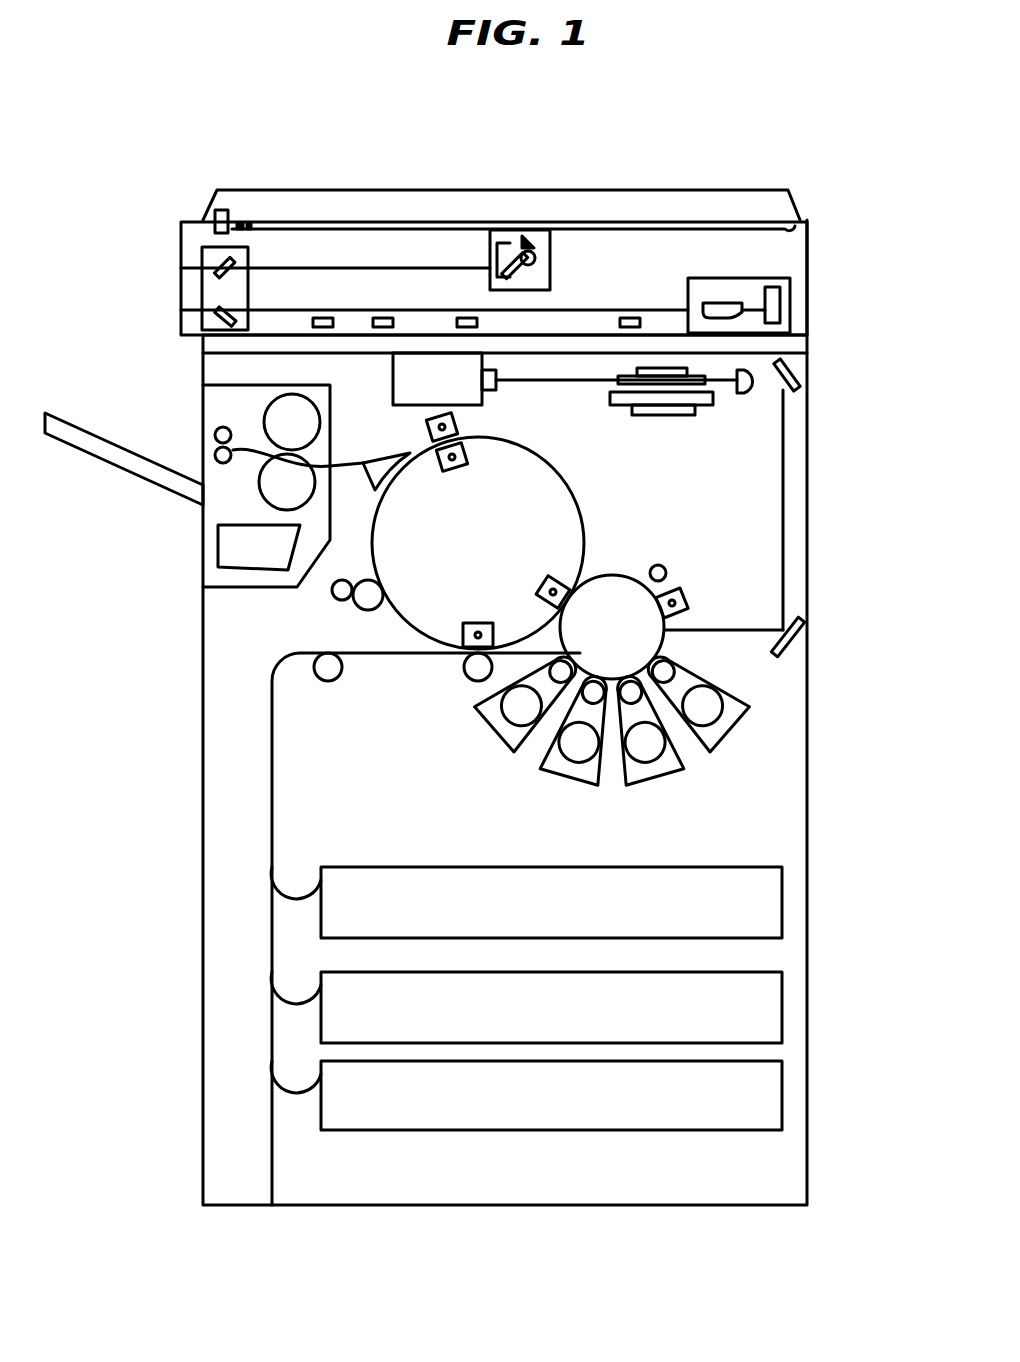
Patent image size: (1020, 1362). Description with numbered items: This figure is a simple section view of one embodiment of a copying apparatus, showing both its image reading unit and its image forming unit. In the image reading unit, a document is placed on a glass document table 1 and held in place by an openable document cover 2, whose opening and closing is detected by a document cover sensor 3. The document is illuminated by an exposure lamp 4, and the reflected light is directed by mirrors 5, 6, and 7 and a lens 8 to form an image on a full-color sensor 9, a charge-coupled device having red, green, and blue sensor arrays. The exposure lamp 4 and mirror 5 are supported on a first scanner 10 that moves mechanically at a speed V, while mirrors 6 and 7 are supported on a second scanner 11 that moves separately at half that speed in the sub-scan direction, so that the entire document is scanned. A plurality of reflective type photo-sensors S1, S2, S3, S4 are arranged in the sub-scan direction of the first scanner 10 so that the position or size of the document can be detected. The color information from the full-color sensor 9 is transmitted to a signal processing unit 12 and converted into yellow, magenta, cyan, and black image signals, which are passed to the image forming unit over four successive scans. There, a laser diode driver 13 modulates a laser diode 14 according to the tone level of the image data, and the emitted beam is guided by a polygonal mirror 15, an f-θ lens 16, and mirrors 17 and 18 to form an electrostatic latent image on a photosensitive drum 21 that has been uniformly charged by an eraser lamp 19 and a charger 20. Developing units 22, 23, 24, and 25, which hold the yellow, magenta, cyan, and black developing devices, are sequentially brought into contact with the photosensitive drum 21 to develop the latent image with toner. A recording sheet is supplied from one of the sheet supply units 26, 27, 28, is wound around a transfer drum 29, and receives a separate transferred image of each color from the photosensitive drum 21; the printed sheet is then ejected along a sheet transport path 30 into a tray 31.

The glass document table 1 is at (808, 225).
The document cover 2 is at (340, 190).
The document cover sensor 3 is at (208, 218).
The exposure lamp 4 is at (556, 246).
The mirror 5 is at (492, 270).
The mirror 6 is at (202, 265).
The mirror 7 is at (202, 318).
The lens 8 is at (720, 302).
The full-color sensor 9 is at (808, 280).
The first scanner 10 is at (552, 285).
The second scanner 11 is at (245, 255).
The signal processing unit 12 is at (800, 340).
The laser diode driver 13 is at (393, 378).
The laser diode 14 is at (492, 395).
The polygonal mirror 15 is at (665, 416).
The f-θ lens 16 is at (746, 396).
The mirror 17 is at (800, 372).
The mirror 18 is at (808, 645).
The eraser lamp 19 is at (666, 568).
The charger 20 is at (690, 604).
The photosensitive drum 21 is at (612, 573).
The developing unit 22 is at (728, 740).
The developing unit 23 is at (655, 775).
The developing unit 24 is at (572, 775).
The developing unit 25 is at (492, 735).
The sheet supply unit 26 is at (782, 893).
The sheet supply unit 27 is at (782, 995).
The sheet supply unit 28 is at (782, 1087).
The transfer drum 29 is at (565, 458).
The sheet transport path 30 is at (347, 460).
The tray 31 is at (108, 439).
The reflective type photo-sensor S1 is at (630, 318).
The reflective type photo-sensor S2 is at (466, 318).
The reflective type photo-sensor S3 is at (382, 318).
The reflective type photo-sensor S4 is at (320, 318).